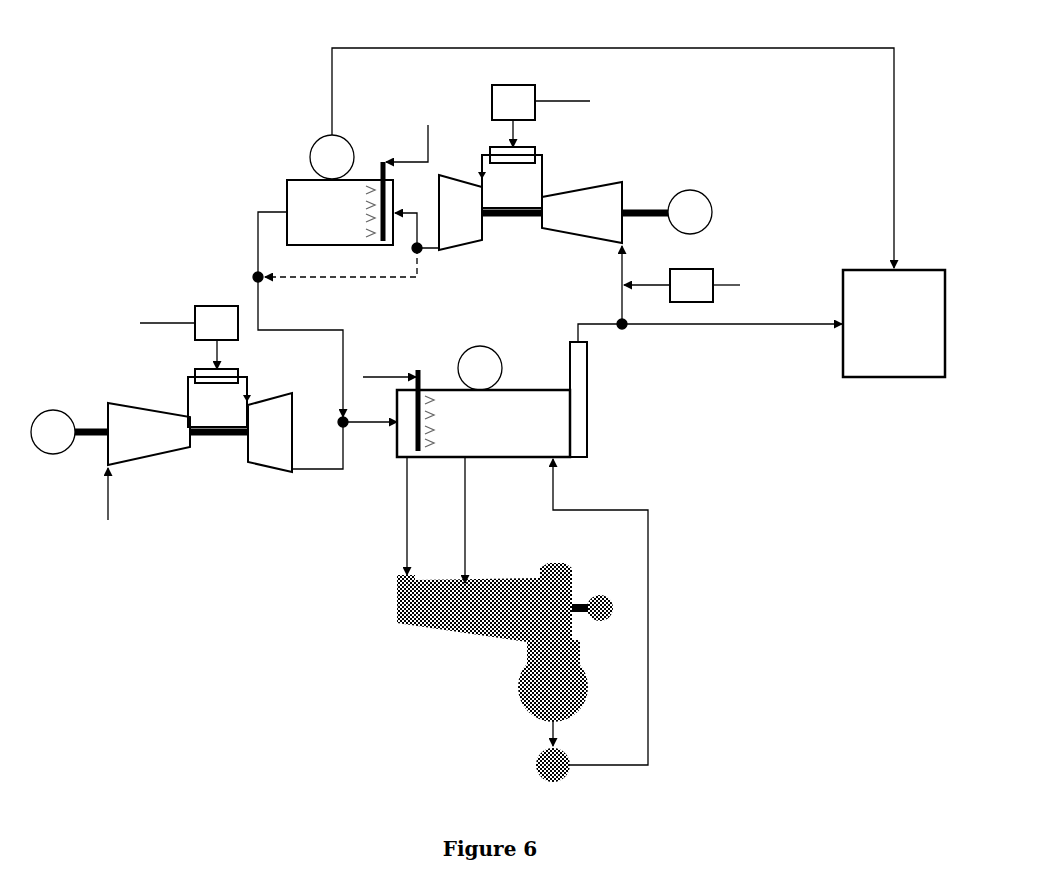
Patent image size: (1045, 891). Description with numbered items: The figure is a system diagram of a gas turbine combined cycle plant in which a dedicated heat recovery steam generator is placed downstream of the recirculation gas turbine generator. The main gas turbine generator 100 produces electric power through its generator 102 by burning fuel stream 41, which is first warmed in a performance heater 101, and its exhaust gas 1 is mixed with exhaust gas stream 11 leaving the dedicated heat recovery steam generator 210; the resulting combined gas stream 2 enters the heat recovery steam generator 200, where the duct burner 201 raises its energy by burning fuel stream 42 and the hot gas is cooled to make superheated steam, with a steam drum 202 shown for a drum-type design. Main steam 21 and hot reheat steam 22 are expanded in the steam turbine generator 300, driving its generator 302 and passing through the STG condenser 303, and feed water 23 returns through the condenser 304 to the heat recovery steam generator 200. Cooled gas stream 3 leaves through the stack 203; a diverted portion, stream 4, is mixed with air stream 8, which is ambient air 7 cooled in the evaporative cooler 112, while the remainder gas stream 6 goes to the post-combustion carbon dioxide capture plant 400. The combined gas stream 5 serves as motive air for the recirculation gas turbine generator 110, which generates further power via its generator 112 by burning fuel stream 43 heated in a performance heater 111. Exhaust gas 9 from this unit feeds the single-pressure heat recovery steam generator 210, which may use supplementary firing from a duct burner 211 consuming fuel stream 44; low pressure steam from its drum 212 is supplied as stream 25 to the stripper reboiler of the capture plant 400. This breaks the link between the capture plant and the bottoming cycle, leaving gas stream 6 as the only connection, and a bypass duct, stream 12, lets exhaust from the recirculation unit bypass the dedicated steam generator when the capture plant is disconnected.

The exhaust gas stream 1 is at (317, 462).
The combined exhaust gas stream 2 is at (367, 433).
The cooled gas stream 3 is at (593, 328).
The diverted gas stream 4 is at (616, 306).
The combined gas stream 5 is at (620, 269).
The remainder gas stream 6 is at (732, 336).
The ambient air 7 is at (737, 286).
The air stream 8 is at (647, 275).
The exhaust gas 9 is at (417, 221).
The exhaust gas stream 11 is at (300, 347).
The bypass duct stream 12 is at (335, 274).
The main steam 21 is at (390, 516).
The hot reheat steam 22 is at (448, 520).
The feed water 23 is at (600, 612).
The LP steam stream 25 is at (613, 158).
The fuel stream 41 is at (150, 324).
The fuel stream 42 is at (389, 365).
The fuel stream 43 is at (578, 102).
The fuel stream 44 is at (412, 133).
The main gas turbine generator 100 is at (200, 448).
The performance heater 101 is at (216, 331).
The generator 102 is at (69, 417).
The recirculation gas turbine generator 110 is at (530, 212).
The performance heater 111 is at (512, 111).
The generator / evaporative cooler 112 is at (679, 235).
The heat recovery steam generator 200 is at (483, 438).
The duct burner 201 is at (443, 410).
The steam drum 202 is at (480, 359).
The stack 203 is at (597, 399).
The dedicated heat recovery steam generator 210 is at (313, 228).
The duct burner 211 is at (356, 201).
The drum 212 is at (316, 156).
The steam turbine generator 300 is at (484, 619).
The generator 302 is at (596, 598).
The STG condenser 303 is at (553, 681).
The condenser 304 is at (533, 752).
The post-combustion carbon dioxide capture plant 400 is at (894, 323).